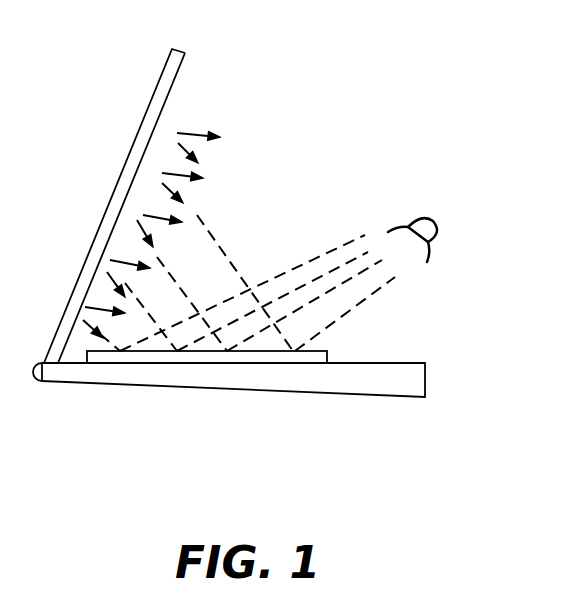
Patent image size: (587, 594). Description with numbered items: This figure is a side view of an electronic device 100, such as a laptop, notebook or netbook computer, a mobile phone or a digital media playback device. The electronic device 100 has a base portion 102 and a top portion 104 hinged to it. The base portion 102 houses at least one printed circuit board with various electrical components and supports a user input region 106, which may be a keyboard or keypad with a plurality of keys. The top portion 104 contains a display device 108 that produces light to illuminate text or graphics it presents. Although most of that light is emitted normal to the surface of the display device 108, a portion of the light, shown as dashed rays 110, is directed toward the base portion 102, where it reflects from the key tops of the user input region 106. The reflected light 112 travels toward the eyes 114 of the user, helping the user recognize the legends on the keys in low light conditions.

The electronic device 100 is at (434, 58).
The base portion 102 is at (208, 393).
The top portion 104 is at (144, 206).
The user input region 106 is at (327, 361).
The display device 108 is at (165, 110).
The incident light rays 110 is at (222, 248).
The reflected light 112 is at (365, 302).
The eyes 114 is at (437, 222).